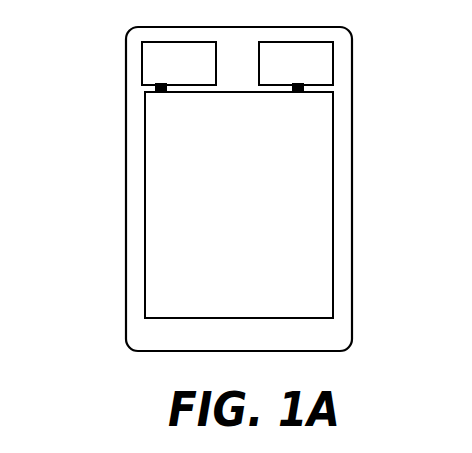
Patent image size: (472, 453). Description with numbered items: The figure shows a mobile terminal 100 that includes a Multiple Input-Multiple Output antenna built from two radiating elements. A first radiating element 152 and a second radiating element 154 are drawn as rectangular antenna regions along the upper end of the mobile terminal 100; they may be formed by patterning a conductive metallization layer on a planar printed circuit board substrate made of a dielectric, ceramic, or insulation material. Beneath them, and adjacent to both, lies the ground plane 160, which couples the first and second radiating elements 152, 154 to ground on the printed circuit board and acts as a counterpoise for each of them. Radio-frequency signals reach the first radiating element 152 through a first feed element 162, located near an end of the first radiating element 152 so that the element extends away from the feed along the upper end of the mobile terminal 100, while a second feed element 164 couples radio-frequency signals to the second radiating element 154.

The mobile terminal 100 is at (125, 132).
The first radiating element 152 is at (157, 60).
The second radiating element 154 is at (313, 55).
The ground plane 160 is at (163, 238).
The first feed element 162 is at (164, 94).
The second feed element 164 is at (295, 94).